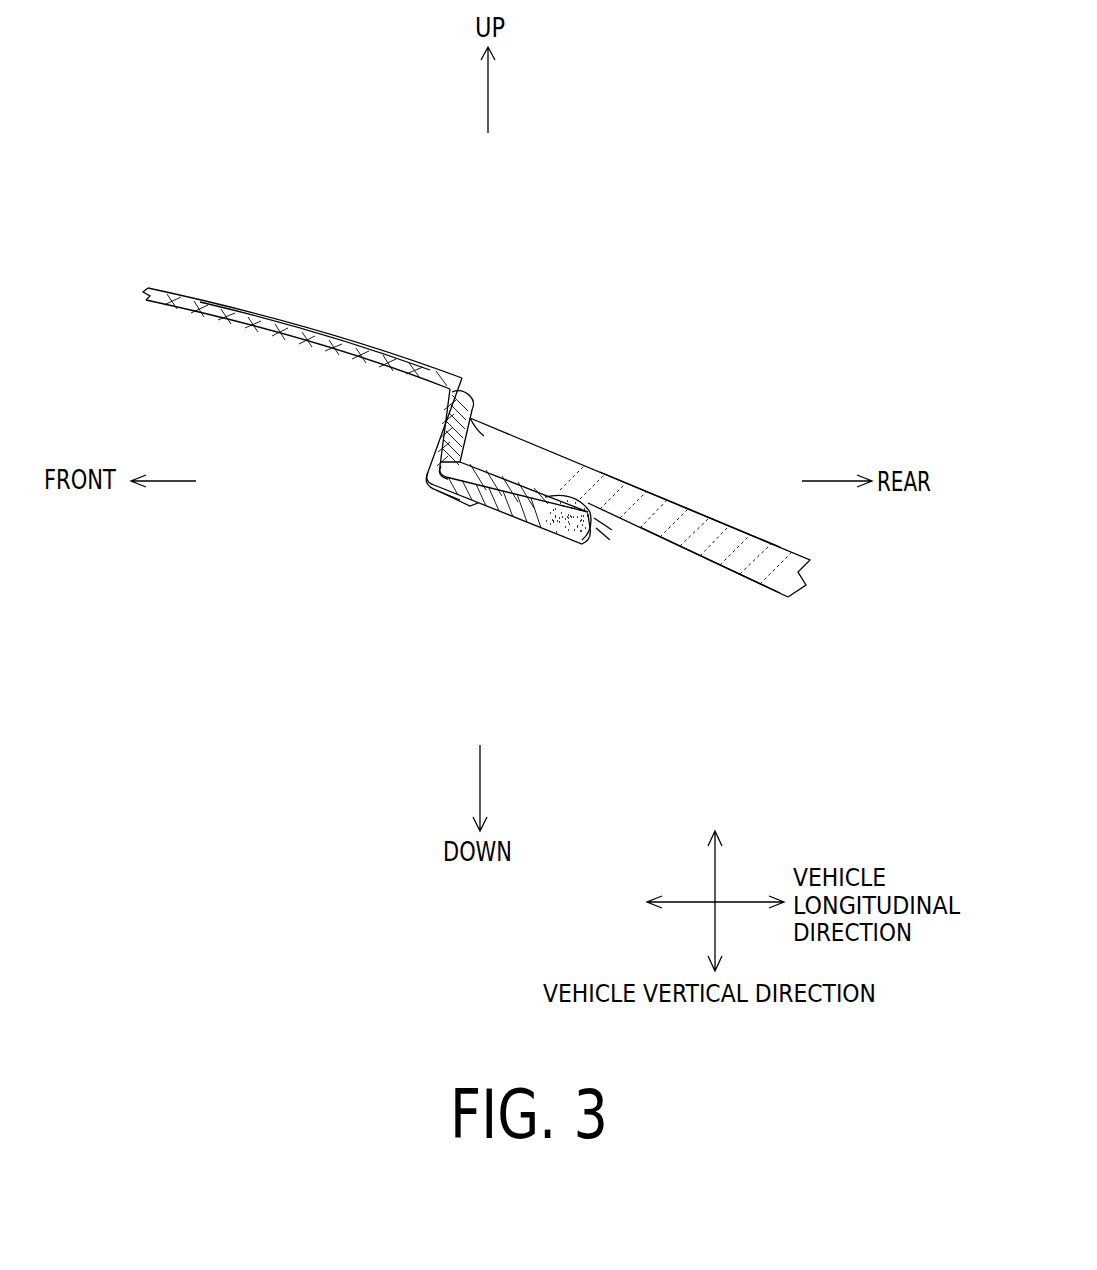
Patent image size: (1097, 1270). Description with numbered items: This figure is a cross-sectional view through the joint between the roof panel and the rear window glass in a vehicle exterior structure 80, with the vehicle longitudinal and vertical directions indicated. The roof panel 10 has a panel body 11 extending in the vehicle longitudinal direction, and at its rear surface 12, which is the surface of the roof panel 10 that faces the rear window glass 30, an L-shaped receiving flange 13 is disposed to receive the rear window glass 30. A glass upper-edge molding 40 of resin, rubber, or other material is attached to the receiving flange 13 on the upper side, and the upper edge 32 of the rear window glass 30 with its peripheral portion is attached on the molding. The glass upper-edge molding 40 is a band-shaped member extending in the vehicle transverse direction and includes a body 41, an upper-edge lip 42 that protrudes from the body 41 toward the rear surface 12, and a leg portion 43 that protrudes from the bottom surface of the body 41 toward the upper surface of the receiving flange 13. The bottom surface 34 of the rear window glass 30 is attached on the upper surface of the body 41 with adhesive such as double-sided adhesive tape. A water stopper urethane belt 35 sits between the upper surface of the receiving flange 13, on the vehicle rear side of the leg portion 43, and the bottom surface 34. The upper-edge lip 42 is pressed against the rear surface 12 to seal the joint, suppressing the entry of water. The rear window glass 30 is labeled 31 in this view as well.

The roof panel 10 is at (225, 309).
The panel body 11 is at (317, 333).
The rear surface 12 is at (481, 388).
The receiving flange 13 is at (450, 495).
The rear window glass 30 is at (664, 468).
The panel body of rear panel 31 is at (705, 508).
The upper edge 32 is at (485, 415).
The bottom surface 34 is at (693, 552).
The water stopper urethane belt 35 is at (600, 522).
The glass upper-edge molding 40 is at (472, 505).
The body 41 is at (432, 487).
The upper-edge lip 42 is at (440, 413).
The leg portion 43 is at (510, 520).
The vehicle exterior structure 80 is at (703, 97).